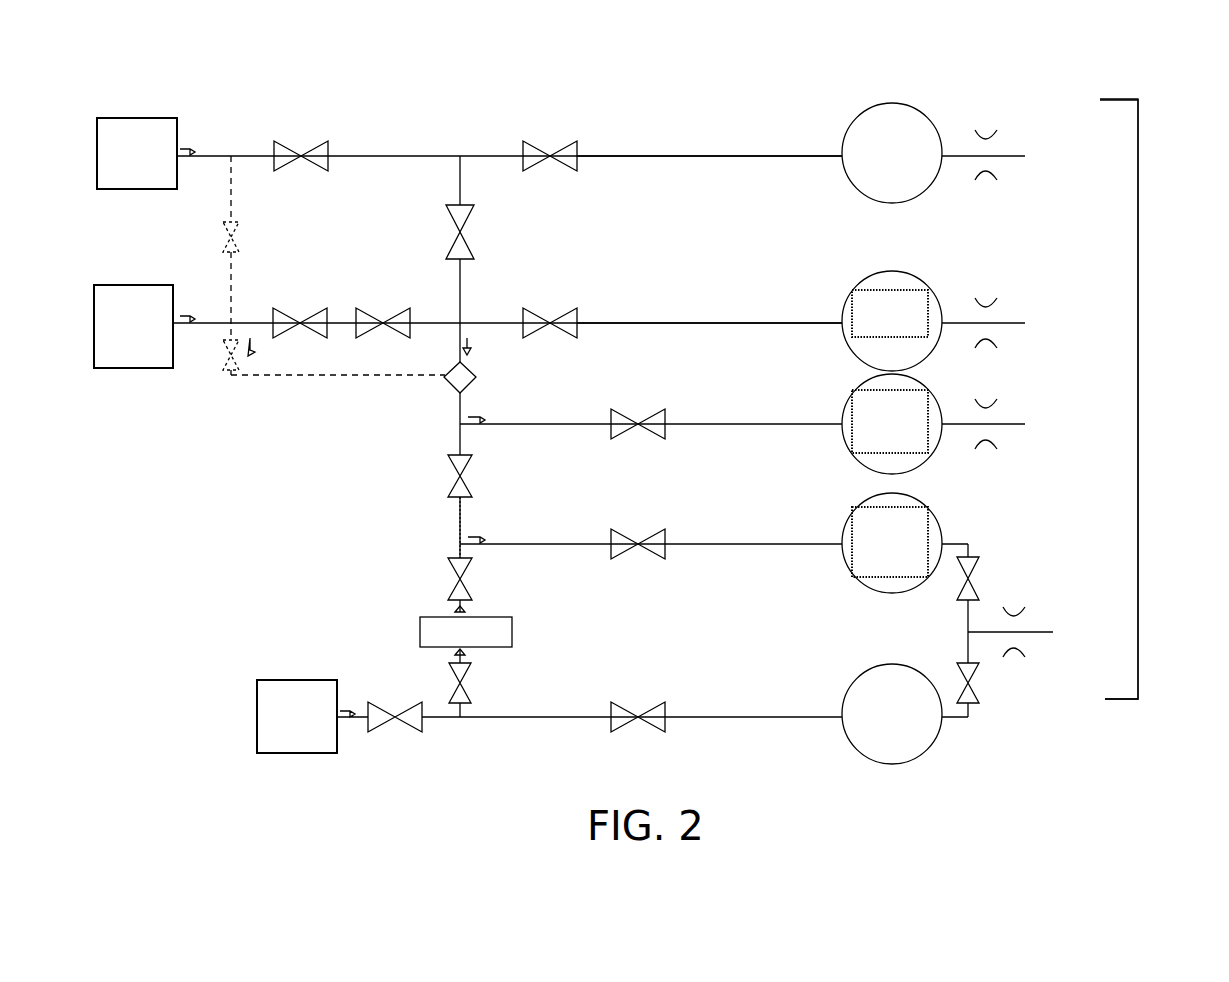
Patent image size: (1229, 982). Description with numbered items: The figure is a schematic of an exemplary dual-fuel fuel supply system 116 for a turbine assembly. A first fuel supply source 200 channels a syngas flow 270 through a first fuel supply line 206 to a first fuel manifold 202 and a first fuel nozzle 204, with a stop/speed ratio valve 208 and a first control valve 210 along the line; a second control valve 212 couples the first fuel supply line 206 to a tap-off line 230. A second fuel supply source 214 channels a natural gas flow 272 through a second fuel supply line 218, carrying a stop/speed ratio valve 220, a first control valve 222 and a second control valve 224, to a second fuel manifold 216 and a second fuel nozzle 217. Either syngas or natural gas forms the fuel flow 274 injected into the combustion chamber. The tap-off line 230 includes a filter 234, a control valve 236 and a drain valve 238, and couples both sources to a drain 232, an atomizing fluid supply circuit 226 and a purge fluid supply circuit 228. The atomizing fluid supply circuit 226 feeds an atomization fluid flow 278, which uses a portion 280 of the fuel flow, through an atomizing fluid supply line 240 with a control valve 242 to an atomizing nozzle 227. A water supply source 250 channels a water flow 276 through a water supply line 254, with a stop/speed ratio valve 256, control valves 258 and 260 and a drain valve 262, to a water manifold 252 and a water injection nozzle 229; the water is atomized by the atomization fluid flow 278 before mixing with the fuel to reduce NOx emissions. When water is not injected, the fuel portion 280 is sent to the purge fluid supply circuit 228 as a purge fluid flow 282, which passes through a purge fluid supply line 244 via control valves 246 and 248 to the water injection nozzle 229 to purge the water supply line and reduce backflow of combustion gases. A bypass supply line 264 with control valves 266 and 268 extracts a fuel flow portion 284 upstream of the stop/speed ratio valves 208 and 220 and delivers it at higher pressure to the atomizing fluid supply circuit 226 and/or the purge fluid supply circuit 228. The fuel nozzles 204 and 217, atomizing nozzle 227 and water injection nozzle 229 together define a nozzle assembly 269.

The fuel supply system 116 is at (1003, 94).
The first fuel supply source 200 is at (130, 117).
The first fuel manifold 202 is at (874, 103).
The first fuel nozzle 204 is at (997, 138).
The first fuel supply line 206 is at (693, 156).
The stop/speed ratio valve 208 is at (312, 140).
The first control valve 210 is at (562, 140).
The second control valve 212 is at (465, 240).
The second fuel supply source 214 is at (113, 370).
The second fuel manifold 216 is at (888, 271).
The second fuel nozzle 217 is at (997, 305).
The second fuel supply line 218 is at (705, 323).
The stop/speed ratio valve 220 is at (316, 307).
The first control valve 222 is at (394, 307).
The second control valve 224 is at (562, 307).
The atomizing fluid supply circuit 226 is at (928, 457).
The atomizing nozzle 227 is at (997, 406).
The purge fluid supply circuit 228 is at (882, 580).
The water injection nozzle 229 is at (1025, 612).
The tap-off line 230 is at (458, 518).
The drain 232 is at (432, 616).
The filter 234 is at (445, 385).
The control valve 236 is at (465, 480).
The drain valve 238 is at (465, 583).
The atomizing fluid supply line 240 is at (720, 424).
The control valve 242 is at (650, 408).
The purge fluid supply line 244 is at (715, 544).
The control valve 246 is at (650, 528).
The control valve 248 is at (972, 582).
The water supply source 250 is at (307, 679).
The water manifold 252 is at (888, 764).
The water supply line 254 is at (722, 717).
The stop/speed ratio valve 256 is at (385, 728).
The control valve 258 is at (652, 701).
The control valve 260 is at (972, 687).
The drain valve 262 is at (465, 688).
The bypass supply line 264 is at (318, 375).
The control valve 266 is at (236, 242).
The control valve 268 is at (222, 362).
The nozzle assembly 269 is at (1140, 583).
The syngas flow 270 is at (219, 118).
The natural gas flow 272 is at (185, 316).
The fuel flow 274 is at (185, 149).
The water flow 276 is at (345, 711).
The atomization fluid flow 278 is at (475, 410).
The fuel flow portion 280 is at (470, 340).
The purge fluid flow 282 is at (475, 530).
The fuel flow portion 284 is at (256, 350).